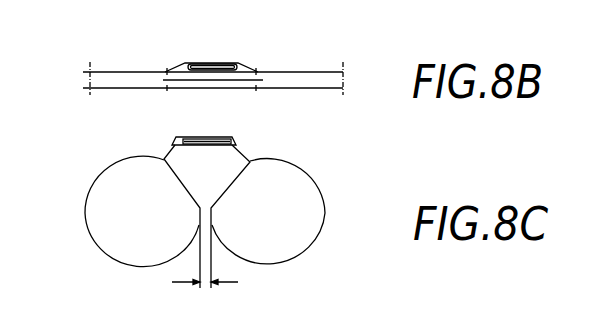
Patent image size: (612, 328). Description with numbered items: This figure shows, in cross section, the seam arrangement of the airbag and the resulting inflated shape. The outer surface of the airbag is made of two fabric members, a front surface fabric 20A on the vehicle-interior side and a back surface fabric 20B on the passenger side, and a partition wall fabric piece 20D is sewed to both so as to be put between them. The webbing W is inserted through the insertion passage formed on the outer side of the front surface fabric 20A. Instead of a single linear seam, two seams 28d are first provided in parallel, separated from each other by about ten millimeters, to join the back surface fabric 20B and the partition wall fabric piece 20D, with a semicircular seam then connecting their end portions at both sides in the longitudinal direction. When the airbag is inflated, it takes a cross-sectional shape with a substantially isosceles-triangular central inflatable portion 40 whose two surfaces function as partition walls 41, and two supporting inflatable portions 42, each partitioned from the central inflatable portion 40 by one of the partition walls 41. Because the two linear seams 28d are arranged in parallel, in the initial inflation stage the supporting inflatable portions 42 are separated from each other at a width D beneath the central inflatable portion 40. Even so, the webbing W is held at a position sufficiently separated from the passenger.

In FIG. 8B, the front surface fabric 20A is at (312, 72).
In FIG. 8B, the back surface fabric 20B is at (313, 88).
In FIG. 8B, the partition wall fabric piece 20D is at (212, 86).
In FIG. 8B, the protrusion 28d is at (178, 70).
In FIG. 8B, the webbing W is at (227, 64).
In FIG. 8C, the webbing W is at (225, 138).
In FIG. 8C, the central inflatable portion 40 is at (182, 168).
In FIG. 8C, the partition wall 41 is at (113, 190).
In FIG. 8C, the supporting inflatable portion 42 is at (110, 255).
In FIG. 8C, the width D is at (205, 274).